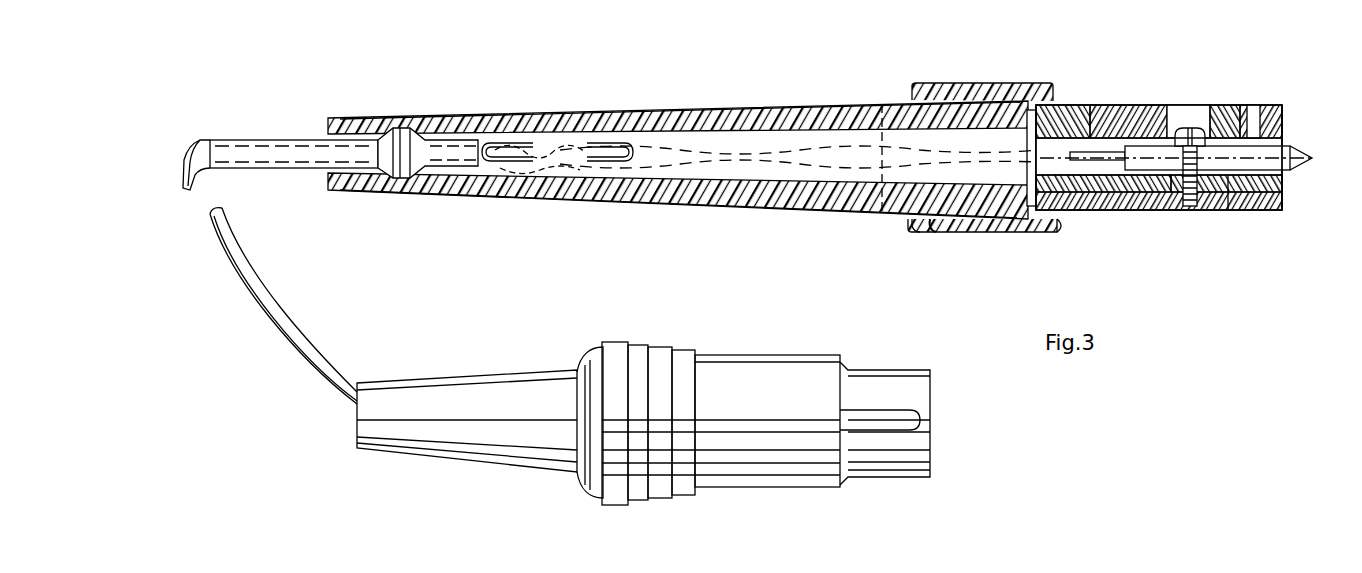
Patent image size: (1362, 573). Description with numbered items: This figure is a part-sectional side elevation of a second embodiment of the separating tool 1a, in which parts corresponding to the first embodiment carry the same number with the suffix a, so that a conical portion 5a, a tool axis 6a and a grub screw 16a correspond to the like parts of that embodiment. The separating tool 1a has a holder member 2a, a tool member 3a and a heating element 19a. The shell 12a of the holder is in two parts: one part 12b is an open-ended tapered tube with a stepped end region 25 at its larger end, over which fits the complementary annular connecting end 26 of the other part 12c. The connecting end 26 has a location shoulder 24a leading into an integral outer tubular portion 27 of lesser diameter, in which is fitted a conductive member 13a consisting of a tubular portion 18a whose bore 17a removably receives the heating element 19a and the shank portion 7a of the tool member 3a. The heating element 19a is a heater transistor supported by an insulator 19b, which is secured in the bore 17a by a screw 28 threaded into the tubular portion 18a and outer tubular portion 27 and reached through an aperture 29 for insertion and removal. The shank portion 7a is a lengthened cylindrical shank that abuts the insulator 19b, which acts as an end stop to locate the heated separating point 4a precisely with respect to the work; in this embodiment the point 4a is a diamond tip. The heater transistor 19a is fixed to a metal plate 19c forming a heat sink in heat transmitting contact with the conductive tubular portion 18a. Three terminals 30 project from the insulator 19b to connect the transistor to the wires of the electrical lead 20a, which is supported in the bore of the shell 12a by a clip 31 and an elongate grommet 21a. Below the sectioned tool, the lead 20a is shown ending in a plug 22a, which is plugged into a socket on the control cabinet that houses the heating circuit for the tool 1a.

The separating tool 1a is at (1136, 62).
The holder member 2a is at (846, 88).
The tool member 3a is at (1292, 133).
The separating point 4a is at (1306, 166).
The contact pin 5a is at (1290, 172).
The sleeve 6a is at (1234, 172).
The shank portion 7a is at (1266, 172).
The shell 12a is at (956, 58).
The shell part 12b is at (582, 110).
The shell part 12c is at (976, 247).
The conductive member 13a is at (1096, 196).
The end cap 16a is at (1272, 108).
The bore 17a is at (1098, 105).
The tubular portion 18a is at (1220, 178).
The heating element 19a is at (1210, 178).
The insulator 19b is at (1148, 178).
The metal plate 19c is at (1226, 128).
The electrical lead 20a is at (676, 160).
The elongate grommet 21a is at (320, 172).
The plug 22a is at (800, 478).
The location shoulder 24a is at (1060, 230).
The stepped end region 25 is at (940, 200).
The annular connecting end 26 is at (984, 100).
The outer tubular portion 27 is at (1138, 105).
The screw 28 is at (1170, 182).
The aperture 29 is at (1202, 105).
The terminals 30 is at (1114, 176).
The clip 31 is at (527, 200).